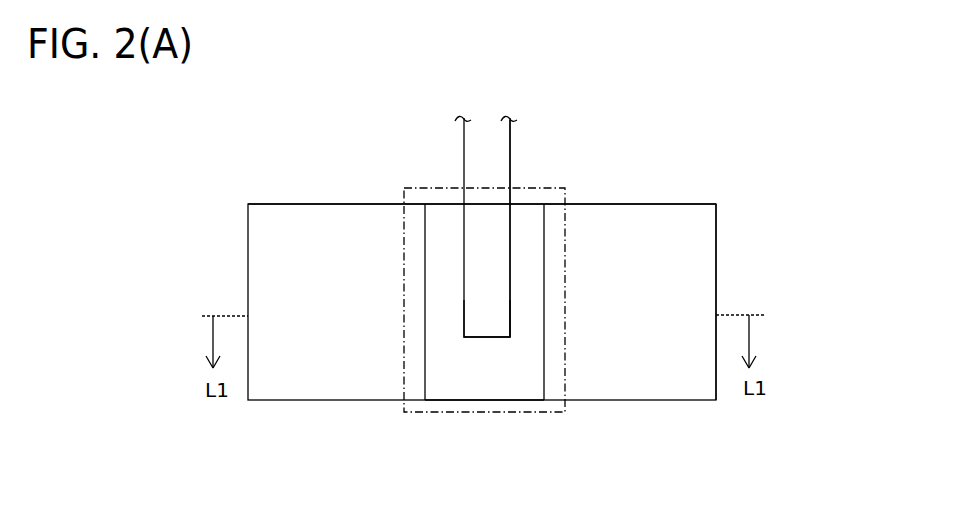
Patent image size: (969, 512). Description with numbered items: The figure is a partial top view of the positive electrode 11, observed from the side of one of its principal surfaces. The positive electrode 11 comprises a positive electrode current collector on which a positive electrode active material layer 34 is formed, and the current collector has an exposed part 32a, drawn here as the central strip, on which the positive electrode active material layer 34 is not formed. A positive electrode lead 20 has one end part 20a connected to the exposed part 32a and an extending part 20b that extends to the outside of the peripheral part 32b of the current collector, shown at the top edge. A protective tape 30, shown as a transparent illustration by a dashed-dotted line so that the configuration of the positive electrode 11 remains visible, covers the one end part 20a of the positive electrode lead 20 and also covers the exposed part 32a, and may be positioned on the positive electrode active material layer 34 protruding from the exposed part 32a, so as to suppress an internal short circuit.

The positive electrode 11 is at (716, 225).
The positive electrode lead 20 is at (463, 162).
The one end part 20a is at (464, 262).
The extending part 20b is at (511, 167).
The protective tape 30 is at (565, 356).
The exposed part 32a is at (476, 383).
The peripheral part 32b is at (344, 204).
The positive electrode active material layer 34 is at (703, 268).